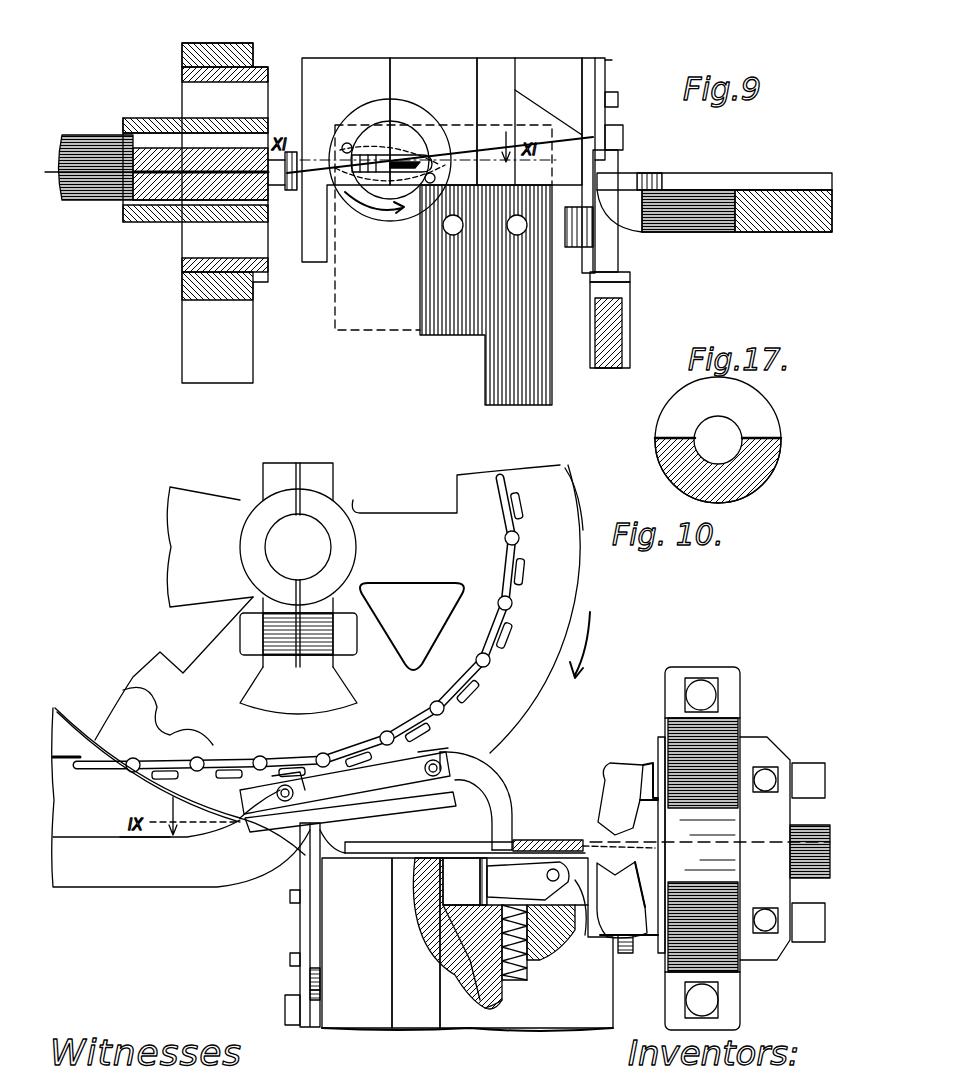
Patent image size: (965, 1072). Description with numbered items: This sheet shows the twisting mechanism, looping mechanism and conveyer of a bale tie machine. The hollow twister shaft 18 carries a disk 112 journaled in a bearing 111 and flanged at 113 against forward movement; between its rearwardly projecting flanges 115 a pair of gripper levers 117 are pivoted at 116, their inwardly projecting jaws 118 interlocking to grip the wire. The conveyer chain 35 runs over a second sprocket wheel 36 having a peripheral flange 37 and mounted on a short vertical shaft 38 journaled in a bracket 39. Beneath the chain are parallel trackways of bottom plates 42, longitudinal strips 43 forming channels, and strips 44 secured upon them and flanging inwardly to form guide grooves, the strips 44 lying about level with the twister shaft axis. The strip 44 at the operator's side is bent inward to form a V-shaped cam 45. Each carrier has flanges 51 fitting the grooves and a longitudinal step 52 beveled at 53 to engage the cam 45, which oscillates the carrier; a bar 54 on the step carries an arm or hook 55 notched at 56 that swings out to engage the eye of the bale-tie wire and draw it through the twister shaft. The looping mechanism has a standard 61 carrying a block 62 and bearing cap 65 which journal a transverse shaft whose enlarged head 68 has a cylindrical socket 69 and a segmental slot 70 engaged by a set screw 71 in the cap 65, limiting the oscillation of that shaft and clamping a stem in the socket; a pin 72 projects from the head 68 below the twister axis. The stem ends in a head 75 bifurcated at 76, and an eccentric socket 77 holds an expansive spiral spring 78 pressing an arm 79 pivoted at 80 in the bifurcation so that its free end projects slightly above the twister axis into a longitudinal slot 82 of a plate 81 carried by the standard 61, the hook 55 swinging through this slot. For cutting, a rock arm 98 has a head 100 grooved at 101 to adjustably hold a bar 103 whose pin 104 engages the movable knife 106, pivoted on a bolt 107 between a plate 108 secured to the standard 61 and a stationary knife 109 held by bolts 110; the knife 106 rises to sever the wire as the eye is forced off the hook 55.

In FIG. 9, the twister shaft 18 is at (97, 200).
In FIG. 10, the twister shaft 18 is at (814, 830).
In FIG. 10, the chain 35 is at (97, 768).
In FIG. 10, the second sprocket wheel 36 is at (473, 500).
In FIG. 10, the peripheral flange 37 is at (565, 594).
In FIG. 10, the short vertical shaft 38 is at (298, 588).
In FIG. 10, the bracket 39 is at (170, 548).
In FIG. 9, the bottom plates 42 is at (788, 232).
In FIG. 10, the bottom plates 42 is at (114, 824).
In FIG. 9, the longitudinal strips 43 is at (760, 208).
In FIG. 9, the longitudinal strips 44 is at (793, 175).
In FIG. 10, the longitudinal strips 44 is at (118, 905).
In FIG. 9, the V-shaped cam 45 is at (648, 180).
In FIG. 10, the V-shaped cam 45 is at (255, 830).
In FIG. 10, the flanges 51 is at (415, 796).
In FIG. 10, the longitudinal steps 52 is at (243, 812).
In FIG. 10, the bevel 53 is at (301, 641).
In FIG. 10, the bars 54 is at (345, 781).
In FIG. 10, the arm or hook 55 is at (498, 800).
In FIG. 10, the notch 56 is at (500, 835).
In FIG. 9, the standard 61 is at (495, 60).
In FIG. 10, the standard 61 is at (410, 1028).
In FIG. 9, the block 62 is at (440, 62).
In FIG. 10, the block 62 is at (465, 1028).
In FIG. 9, the bearing cap 65 is at (345, 62).
In FIG. 10, the bearing cap 65 is at (590, 1028).
In FIG. 17, the head 68 is at (752, 478).
In FIG. 10, the head 68 is at (470, 968).
In FIG. 10, the cylindrical socket 69 is at (490, 1000).
In FIG. 17, the segmental slot 70 is at (768, 412).
In FIG. 10, the set screw 71 is at (628, 953).
In FIG. 9, the pin 72 is at (347, 143).
In FIG. 10, the pin 72 is at (480, 872).
In FIG. 9, the head 75 is at (385, 132).
In FIG. 10, the head 75 is at (590, 882).
In FIG. 9, the bifurcation 76 is at (402, 155).
In FIG. 10, the bifurcation 76 is at (480, 888).
In FIG. 10, the eccentric socket 77 is at (515, 1028).
In FIG. 10, the expansive spiral spring 78 is at (535, 965).
In FIG. 9, the arm 79 is at (428, 160).
In FIG. 10, the arm 79 is at (528, 881).
In FIG. 10, the pivot 80 is at (540, 885).
In FIG. 9, the plate 81 is at (535, 125).
In FIG. 10, the plate 81 is at (555, 840).
In FIG. 10, the longitudinal slot 82 is at (388, 853).
In FIG. 9, the rock arm 98 is at (612, 325).
In FIG. 9, the head 100 is at (632, 293).
In FIG. 9, the groove 101 is at (632, 273).
In FIG. 9, the bar 103 is at (612, 256).
In FIG. 9, the pin 104 is at (575, 248).
In FIG. 10, the knife 106 is at (310, 975).
In FIG. 9, the bolt 107 is at (623, 135).
In FIG. 10, the bolt 107 is at (285, 1008).
In FIG. 9, the plate 108 is at (585, 60).
In FIG. 10, the plate 108 is at (370, 1028).
In FIG. 9, the stationary knife 109 is at (606, 60).
In FIG. 10, the stationary knife 109 is at (305, 990).
In FIG. 9, the bolts 110 is at (615, 92).
In FIG. 10, the bolts 110 is at (290, 896).
In FIG. 9, the bearing 111 is at (182, 345).
In FIG. 10, the bearing 111 is at (728, 668).
In FIG. 9, the disk 112 is at (182, 76).
In FIG. 9, the flange 113 is at (266, 60).
In FIG. 10, the flange 113 is at (660, 740).
In FIG. 9, the rearwardly projecting flanges 115 is at (138, 223).
In FIG. 10, the rearwardly projecting flanges 115 is at (790, 812).
In FIG. 10, the pivots 116 is at (767, 767).
In FIG. 10, the gripper levers 117 is at (806, 765).
In FIG. 10, the jaws 118 is at (627, 850).